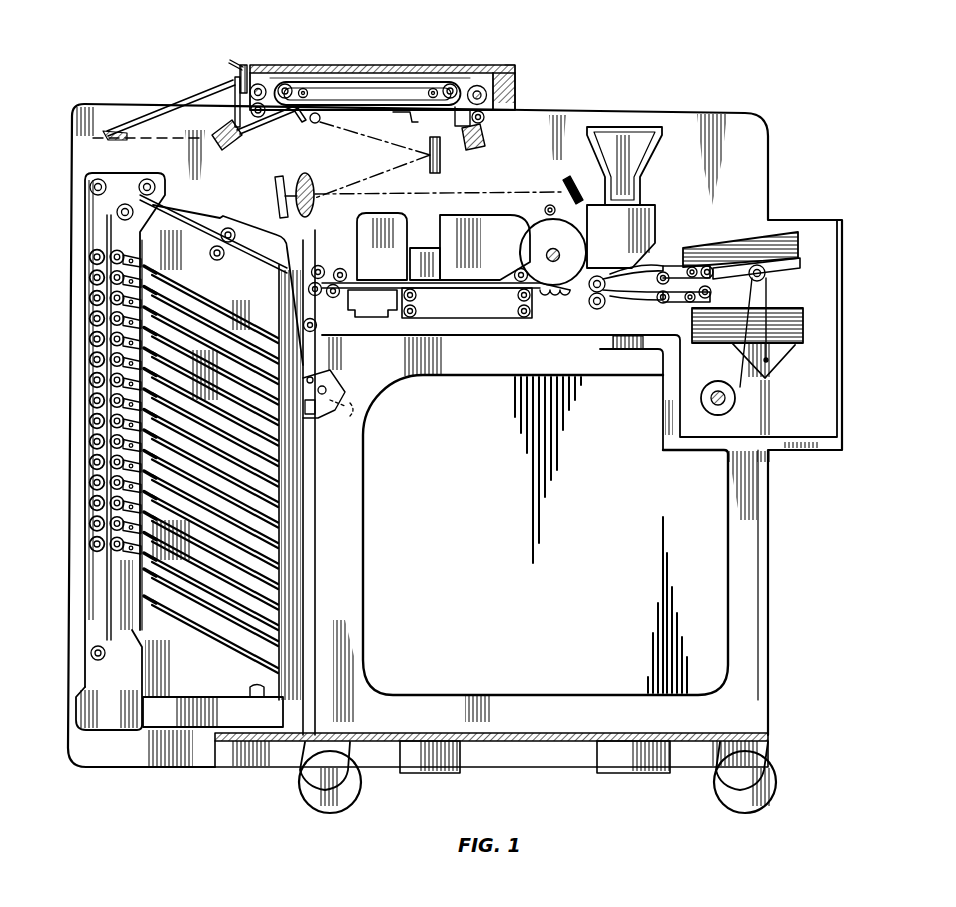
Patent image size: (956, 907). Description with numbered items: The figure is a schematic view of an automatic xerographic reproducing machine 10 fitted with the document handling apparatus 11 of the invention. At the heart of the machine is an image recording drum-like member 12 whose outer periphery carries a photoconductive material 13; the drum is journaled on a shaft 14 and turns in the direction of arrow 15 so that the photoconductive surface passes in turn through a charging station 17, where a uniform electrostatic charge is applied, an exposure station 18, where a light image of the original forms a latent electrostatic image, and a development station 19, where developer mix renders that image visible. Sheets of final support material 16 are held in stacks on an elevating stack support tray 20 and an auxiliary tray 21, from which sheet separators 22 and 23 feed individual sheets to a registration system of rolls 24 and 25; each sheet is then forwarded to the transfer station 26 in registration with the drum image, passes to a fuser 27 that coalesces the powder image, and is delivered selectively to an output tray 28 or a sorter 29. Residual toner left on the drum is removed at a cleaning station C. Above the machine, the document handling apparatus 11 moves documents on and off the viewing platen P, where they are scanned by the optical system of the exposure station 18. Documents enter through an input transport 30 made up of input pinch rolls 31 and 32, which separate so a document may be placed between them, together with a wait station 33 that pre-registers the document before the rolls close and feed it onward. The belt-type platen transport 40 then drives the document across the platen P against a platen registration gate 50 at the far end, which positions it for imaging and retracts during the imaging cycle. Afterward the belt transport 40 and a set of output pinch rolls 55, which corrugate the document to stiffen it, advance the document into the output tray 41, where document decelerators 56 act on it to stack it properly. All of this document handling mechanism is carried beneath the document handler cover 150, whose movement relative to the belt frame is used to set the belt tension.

The automatic xerographic reproducing machine 10 is at (604, 70).
The document handling apparatus 11 is at (398, 56).
The image recording drum-like member 12 is at (624, 197).
The photoconductive material 13 is at (580, 252).
The shaft 14 is at (533, 262).
The arrow 15 is at (556, 264).
The sheet of final support material 16 is at (738, 248).
The charging station 17 is at (545, 210).
The exposure station 18 is at (568, 202).
The development station 19 is at (640, 240).
The elevating stack support tray 20 is at (775, 360).
The auxiliary tray 21 is at (798, 268).
The sheet separator 22 is at (710, 293).
The sheet separator 23 is at (666, 272).
The registration roll 24 is at (590, 292).
The registration roll 25 is at (598, 309).
The transfer station 26 is at (560, 296).
The fuser 27 is at (398, 236).
The tray 28 is at (240, 320).
The sorter 29 is at (58, 225).
The input transport 30 is at (519, 51).
The input pinch roll 31 is at (500, 94).
The input pinch roll 32 is at (486, 118).
The wait station 33 is at (516, 168).
The belt-type platen transport 40 is at (449, 51).
The output tray 41 is at (160, 136).
The platen registration gate 50 is at (264, 138).
The output pinch rolls 55 is at (263, 84).
The document decelerators 56 is at (128, 118).
The document handler cover 150 is at (250, 66).
The cleaning station C is at (480, 236).
The viewing platen P is at (405, 124).